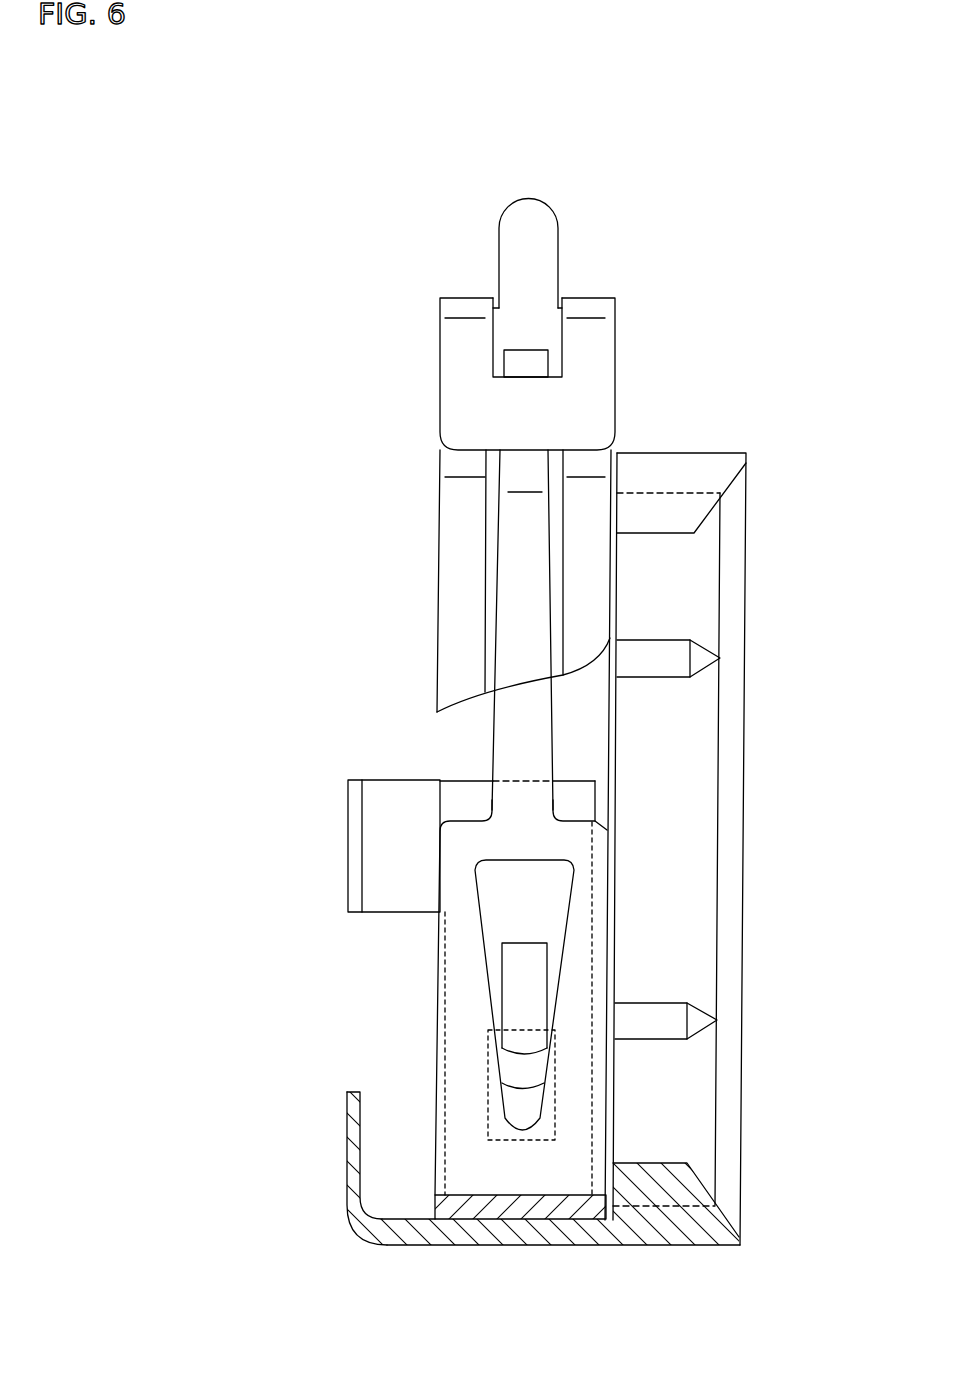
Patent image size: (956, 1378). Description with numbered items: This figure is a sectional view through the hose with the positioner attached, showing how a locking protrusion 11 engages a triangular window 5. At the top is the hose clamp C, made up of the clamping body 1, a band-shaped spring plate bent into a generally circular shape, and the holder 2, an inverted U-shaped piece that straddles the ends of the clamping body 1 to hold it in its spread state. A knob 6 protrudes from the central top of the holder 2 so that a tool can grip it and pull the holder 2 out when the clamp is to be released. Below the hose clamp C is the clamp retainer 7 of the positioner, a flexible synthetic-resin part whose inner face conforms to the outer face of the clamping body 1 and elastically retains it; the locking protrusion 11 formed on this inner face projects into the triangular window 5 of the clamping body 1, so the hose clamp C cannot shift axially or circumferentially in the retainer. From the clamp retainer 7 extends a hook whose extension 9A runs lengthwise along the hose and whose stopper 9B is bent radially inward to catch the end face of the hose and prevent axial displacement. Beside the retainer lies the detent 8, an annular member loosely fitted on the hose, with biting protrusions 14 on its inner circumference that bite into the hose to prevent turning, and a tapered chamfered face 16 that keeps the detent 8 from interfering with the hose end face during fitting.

The clamping body 1 is at (443, 607).
The holder 2 is at (597, 327).
The triangular windows 5 is at (497, 912).
The knob 6 is at (545, 232).
The clamp retainer 7 is at (460, 795).
The detent 8 is at (670, 1230).
The extension 9A is at (408, 1232).
The stopper 9B is at (348, 855).
The locking protrusions 11 is at (510, 1013).
The biting protrusions 14 is at (690, 521).
The tapered chamfered face 16 is at (737, 842).
The hose clamp C is at (437, 511).